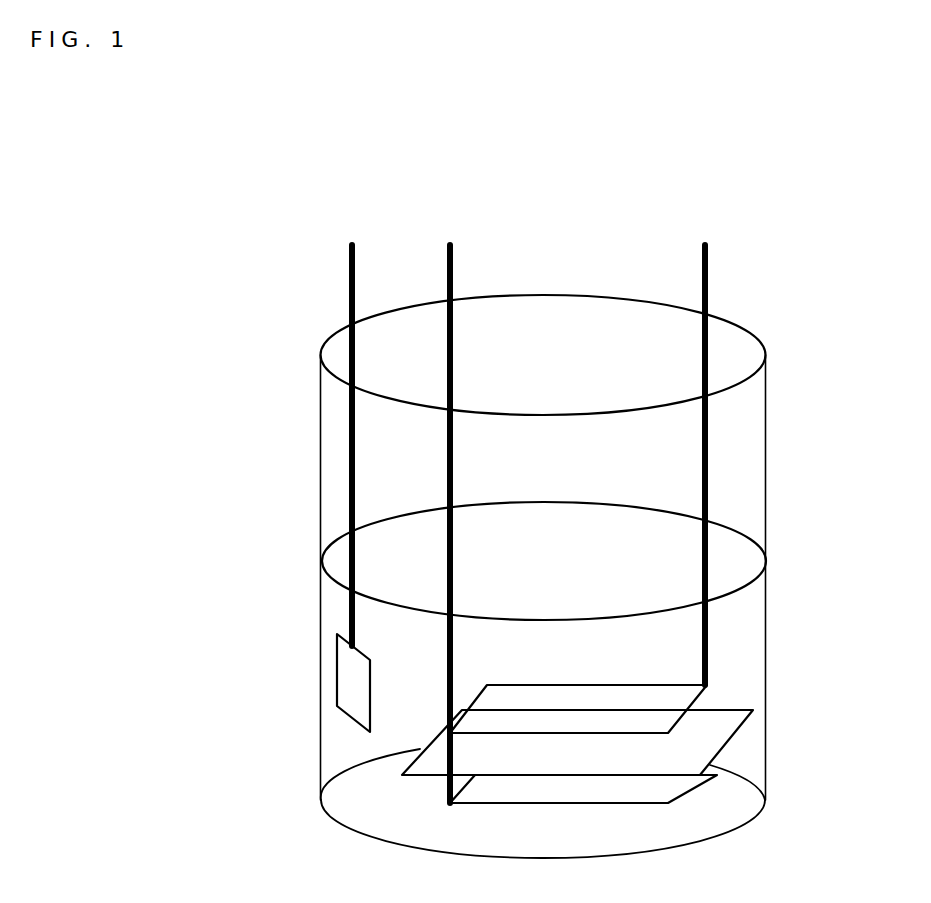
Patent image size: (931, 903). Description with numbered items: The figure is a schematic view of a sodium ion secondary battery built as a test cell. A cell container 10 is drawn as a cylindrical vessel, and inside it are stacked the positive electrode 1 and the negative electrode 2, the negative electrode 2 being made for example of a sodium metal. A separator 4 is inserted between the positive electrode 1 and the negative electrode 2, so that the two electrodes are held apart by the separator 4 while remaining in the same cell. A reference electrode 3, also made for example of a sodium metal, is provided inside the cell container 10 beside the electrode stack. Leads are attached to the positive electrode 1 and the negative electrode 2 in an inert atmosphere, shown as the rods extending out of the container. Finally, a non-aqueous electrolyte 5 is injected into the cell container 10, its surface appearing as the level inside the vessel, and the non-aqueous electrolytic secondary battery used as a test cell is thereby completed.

The positive electrode 1 is at (583, 788).
The negative electrode 2 is at (563, 697).
The reference electrode 3 is at (355, 673).
The separator 4 is at (717, 737).
The non-aqueous electrolyte 5 is at (750, 643).
The cell container 10 is at (767, 505).